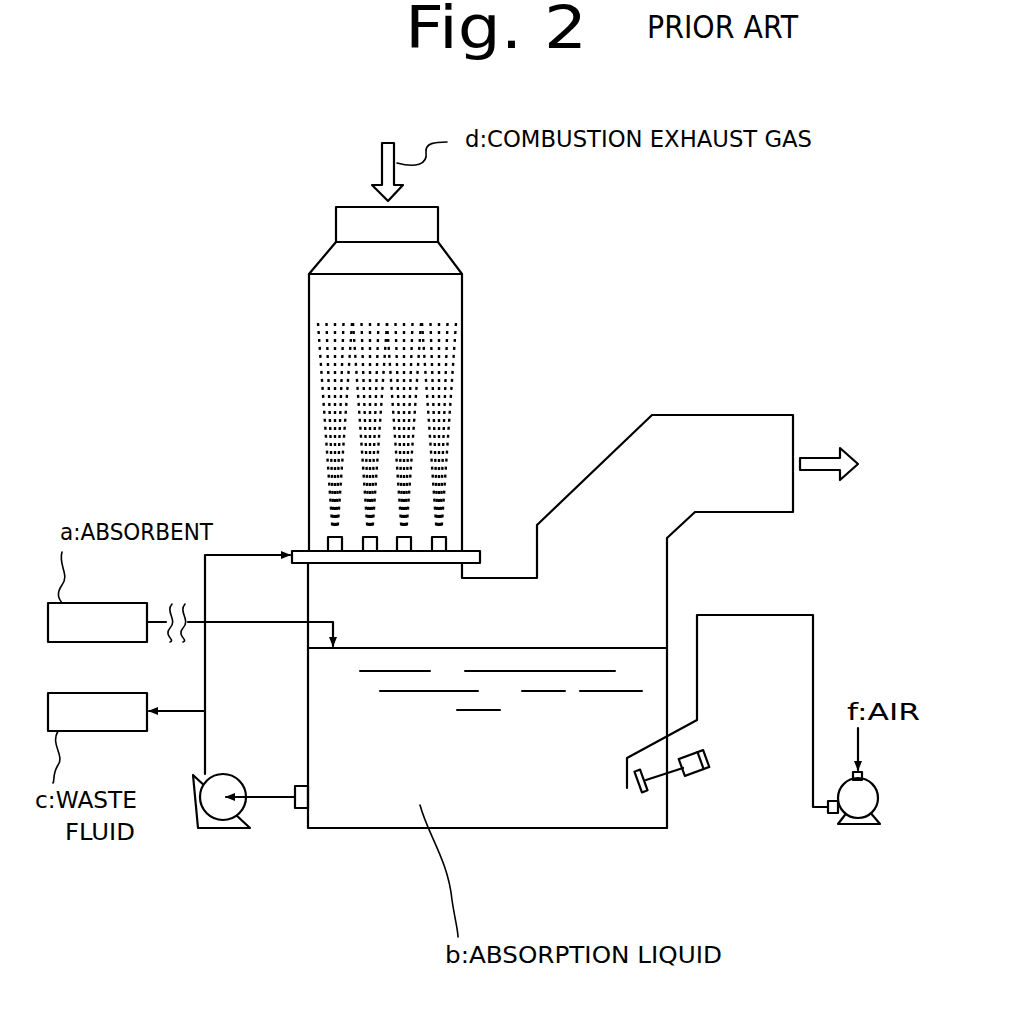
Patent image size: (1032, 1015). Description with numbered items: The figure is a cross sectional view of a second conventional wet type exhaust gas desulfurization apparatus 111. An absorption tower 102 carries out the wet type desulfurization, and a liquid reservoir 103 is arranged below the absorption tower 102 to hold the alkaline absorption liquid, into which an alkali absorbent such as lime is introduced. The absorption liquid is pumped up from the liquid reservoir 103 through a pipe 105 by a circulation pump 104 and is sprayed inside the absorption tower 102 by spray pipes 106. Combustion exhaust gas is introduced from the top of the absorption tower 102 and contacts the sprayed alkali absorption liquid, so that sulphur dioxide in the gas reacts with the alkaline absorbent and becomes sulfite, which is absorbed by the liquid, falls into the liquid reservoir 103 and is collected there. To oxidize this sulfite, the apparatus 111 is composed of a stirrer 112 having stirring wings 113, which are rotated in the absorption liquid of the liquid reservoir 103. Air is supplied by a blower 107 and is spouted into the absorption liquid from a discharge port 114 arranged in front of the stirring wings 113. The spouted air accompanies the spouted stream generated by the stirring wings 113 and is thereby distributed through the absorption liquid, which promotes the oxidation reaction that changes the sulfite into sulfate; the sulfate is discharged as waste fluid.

The absorption tower 102 is at (462, 303).
The liquid reservoir 103 is at (362, 828).
The circulation pump 104 is at (223, 820).
The pipe 105 is at (205, 745).
The spray pipes 106 is at (303, 550).
The blower 107 is at (858, 818).
The wet type exhaust gas desulfurization apparatus 111 is at (743, 263).
The stirrer 112 is at (703, 770).
The stirring wings 113 is at (645, 792).
The discharge port 114 is at (627, 788).